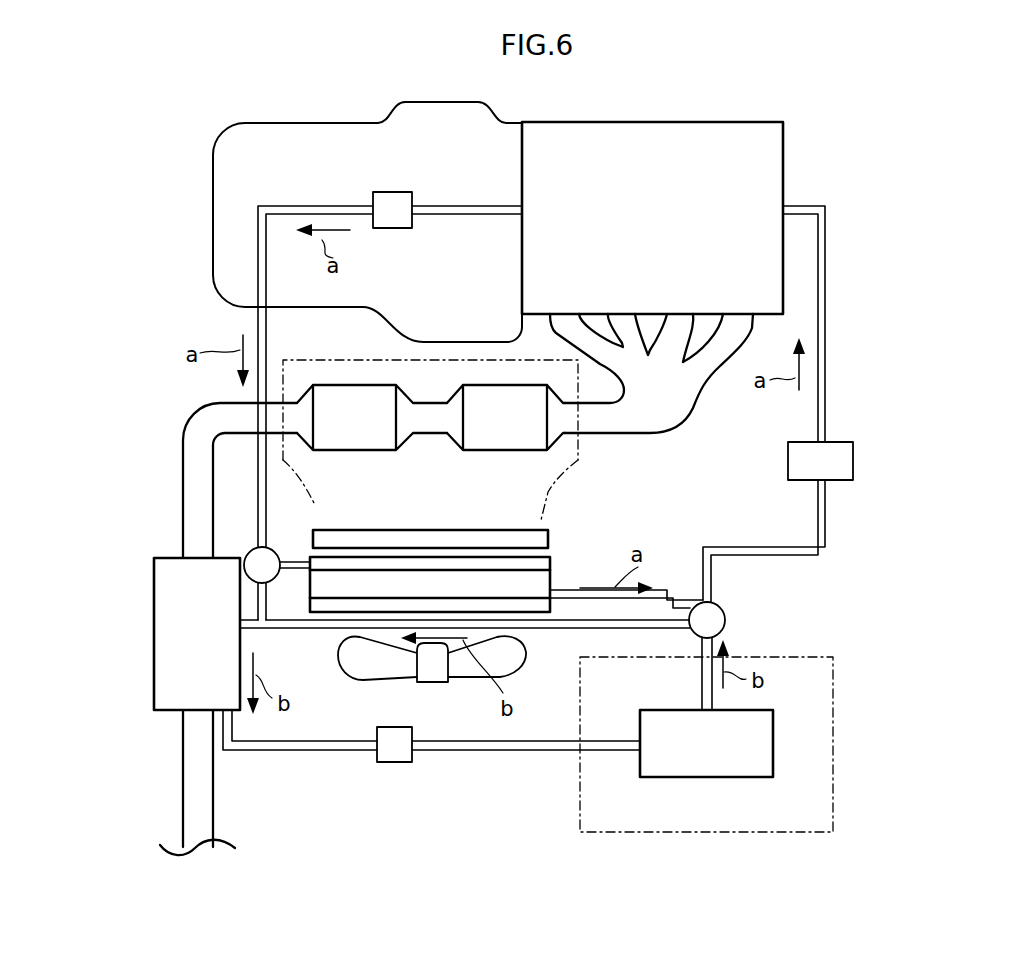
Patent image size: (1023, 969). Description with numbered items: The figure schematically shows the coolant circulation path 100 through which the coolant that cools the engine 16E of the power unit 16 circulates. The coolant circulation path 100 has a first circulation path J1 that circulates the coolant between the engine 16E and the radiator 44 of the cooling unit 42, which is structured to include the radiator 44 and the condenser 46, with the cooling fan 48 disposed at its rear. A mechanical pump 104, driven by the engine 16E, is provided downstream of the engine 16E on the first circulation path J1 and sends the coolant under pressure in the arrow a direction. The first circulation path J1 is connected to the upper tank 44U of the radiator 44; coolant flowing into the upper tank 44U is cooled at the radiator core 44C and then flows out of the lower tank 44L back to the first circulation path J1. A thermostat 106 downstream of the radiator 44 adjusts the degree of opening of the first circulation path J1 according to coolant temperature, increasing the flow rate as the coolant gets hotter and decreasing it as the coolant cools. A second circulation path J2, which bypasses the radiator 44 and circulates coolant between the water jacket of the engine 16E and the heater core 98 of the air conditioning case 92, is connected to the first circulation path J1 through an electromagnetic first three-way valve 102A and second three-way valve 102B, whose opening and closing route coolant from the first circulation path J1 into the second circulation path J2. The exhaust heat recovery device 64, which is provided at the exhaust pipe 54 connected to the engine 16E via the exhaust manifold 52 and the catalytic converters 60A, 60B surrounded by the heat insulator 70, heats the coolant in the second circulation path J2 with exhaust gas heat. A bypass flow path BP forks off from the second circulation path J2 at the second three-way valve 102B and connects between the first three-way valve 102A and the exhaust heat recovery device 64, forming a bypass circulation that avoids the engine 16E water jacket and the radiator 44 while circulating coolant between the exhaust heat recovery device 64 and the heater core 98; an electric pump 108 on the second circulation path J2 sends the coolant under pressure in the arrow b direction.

The power unit 16 is at (783, 148).
The engine 16E is at (740, 122).
The coolant circulation path 100 is at (905, 187).
The mechanical pump 104 is at (398, 192).
The thermostat 106 is at (853, 460).
The electric pump 108 is at (397, 763).
The first three-way valve 102A is at (275, 552).
The second three-way valve 102B is at (725, 620).
The cooling unit 42 is at (615, 537).
The radiator 44 is at (447, 600).
The upper tank 44U is at (561, 557).
The radiator core 44C is at (320, 587).
The lower tank 44L is at (535, 607).
The condenser 46 is at (427, 530).
The cooling fan 48 is at (433, 683).
The exhaust manifold 52 is at (686, 418).
The exhaust pipe 54 is at (183, 492).
The catalytic converter 60A is at (493, 452).
The catalytic converter 60B is at (346, 452).
The exhaust heat recovery device 64 is at (154, 637).
The heat insulator 70 is at (578, 463).
The air conditioning case 92 is at (833, 708).
The heater core 98 is at (773, 745).
The first circulation path J1 is at (826, 320).
The second circulation path J2 is at (533, 752).
The bypass flow path BP is at (638, 630).